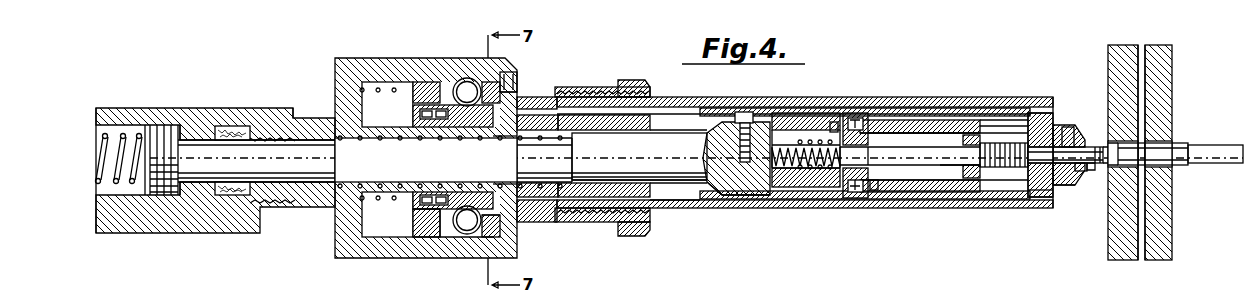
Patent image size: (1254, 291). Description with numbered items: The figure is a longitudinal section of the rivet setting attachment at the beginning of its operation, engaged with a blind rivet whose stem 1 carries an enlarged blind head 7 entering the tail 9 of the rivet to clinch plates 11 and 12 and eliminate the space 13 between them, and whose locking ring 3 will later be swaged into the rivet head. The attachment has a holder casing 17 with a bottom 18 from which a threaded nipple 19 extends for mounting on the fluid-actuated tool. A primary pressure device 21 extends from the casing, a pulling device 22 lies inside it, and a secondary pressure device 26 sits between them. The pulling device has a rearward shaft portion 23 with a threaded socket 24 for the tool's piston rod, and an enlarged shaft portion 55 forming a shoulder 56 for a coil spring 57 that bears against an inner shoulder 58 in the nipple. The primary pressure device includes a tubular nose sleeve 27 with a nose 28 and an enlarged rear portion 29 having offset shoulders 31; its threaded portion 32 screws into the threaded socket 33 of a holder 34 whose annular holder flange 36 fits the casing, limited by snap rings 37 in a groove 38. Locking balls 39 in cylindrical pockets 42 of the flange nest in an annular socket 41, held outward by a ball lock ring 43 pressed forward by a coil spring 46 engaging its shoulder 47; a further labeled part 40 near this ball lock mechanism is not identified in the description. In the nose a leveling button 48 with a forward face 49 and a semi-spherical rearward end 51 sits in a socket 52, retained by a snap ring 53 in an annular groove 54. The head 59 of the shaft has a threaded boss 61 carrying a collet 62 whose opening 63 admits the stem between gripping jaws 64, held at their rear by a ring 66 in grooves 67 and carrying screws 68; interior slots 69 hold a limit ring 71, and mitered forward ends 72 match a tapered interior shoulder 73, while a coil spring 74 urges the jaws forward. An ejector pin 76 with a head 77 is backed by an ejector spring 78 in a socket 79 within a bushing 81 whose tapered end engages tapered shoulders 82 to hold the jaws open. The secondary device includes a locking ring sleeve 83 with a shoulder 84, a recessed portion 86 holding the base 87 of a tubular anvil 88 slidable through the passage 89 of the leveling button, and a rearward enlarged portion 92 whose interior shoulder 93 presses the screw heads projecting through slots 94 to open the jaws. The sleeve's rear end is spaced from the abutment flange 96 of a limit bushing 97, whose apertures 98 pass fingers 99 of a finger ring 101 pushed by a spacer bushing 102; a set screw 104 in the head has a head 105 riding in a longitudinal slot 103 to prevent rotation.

The stem 1 is at (1088, 148).
The locking ring 3 is at (1115, 152).
The enlarged blind head 7 is at (1210, 147).
The tail 9 is at (1175, 145).
The plate 11 is at (1172, 245).
The plate 12 is at (1112, 251).
The space 13 is at (1141, 262).
The holder casing 17 is at (385, 58).
The bottom 18 is at (335, 88).
The externally threaded nipple 19 is at (287, 200).
The primary pressure device 21 is at (1045, 100).
The pulling device 22 is at (758, 192).
The rearward shaft portion 23 is at (528, 163).
The threaded socket 24 is at (355, 170).
The secondary pressure device 26 is at (1000, 170).
The tubular nose sleeve 27 is at (985, 170).
The nose 28 is at (1065, 192).
The enlarged rear portion 29 is at (815, 97).
The offset shoulders 31 is at (900, 210).
The externally threaded portion 32 is at (595, 88).
The threaded socket 33 is at (628, 82).
The holder 34 is at (550, 95).
The annular holder flange 36 is at (467, 78).
The snap rings 37 is at (517, 92).
The groove 38 is at (512, 78).
The locking balls 39 is at (467, 235).
The guide 40 is at (455, 205).
The shallow annular socket 41 is at (470, 235).
The cylindrical pockets 42 is at (445, 218).
The ball lock ring 43 is at (418, 215).
The coil spring 46 is at (388, 200).
The shoulder 47 is at (418, 112).
The leveling button 48 is at (1080, 172).
The forward face 49 is at (1090, 170).
The rearward end 51 is at (1070, 135).
The semi-spherical socket 52 is at (1035, 197).
The snap ring 53 is at (1082, 135).
The annular groove 54 is at (1073, 182).
The enlarged shaft portion 55 is at (683, 145).
The shoulder 56 is at (572, 134).
The coil spring 57 is at (493, 178).
The inner shoulder 58 is at (258, 125).
The head 59 is at (757, 180).
The threaded boss 61 is at (792, 170).
The collet 62 is at (836, 188).
The opening 63 is at (1010, 125).
The gripping jaws 64 is at (976, 125).
The ring 66 is at (842, 115).
The grooves 67 is at (856, 198).
The screws 68 is at (857, 116).
The interior slots 69 is at (970, 133).
The limit ring 71 is at (960, 172).
The forward ends 72 is at (1000, 120).
The tapered interior shoulder 73 is at (990, 182).
The coil spring 74 is at (815, 178).
The ejector pin 76 is at (948, 158).
The head 77 is at (880, 133).
The ejector spring 78 is at (728, 150).
The socket 79 is at (727, 197).
The bushing 81 is at (786, 128).
The tapered shoulders 82 is at (913, 125).
The locking ring sleeve 83 is at (935, 107).
The shoulder 84 is at (875, 165).
The recessed portion 86 is at (1026, 145).
The base 87 is at (1043, 112).
The tubular anvil 88 is at (1110, 148).
The passage 89 is at (1100, 140).
The rearward enlarged portion 92 is at (683, 210).
The interior shoulder 93 is at (876, 205).
The slots 94 is at (834, 112).
The abutment flange 96 is at (525, 212).
The limit bushing 97 is at (400, 194).
The apertures 98 is at (492, 182).
The fingers 99 is at (480, 178).
The finger ring 101 is at (580, 180).
The spacer bushing 102 is at (652, 193).
The longitudinal slot 103 is at (690, 100).
The set screw 104 is at (632, 124).
The head 105 is at (743, 112).